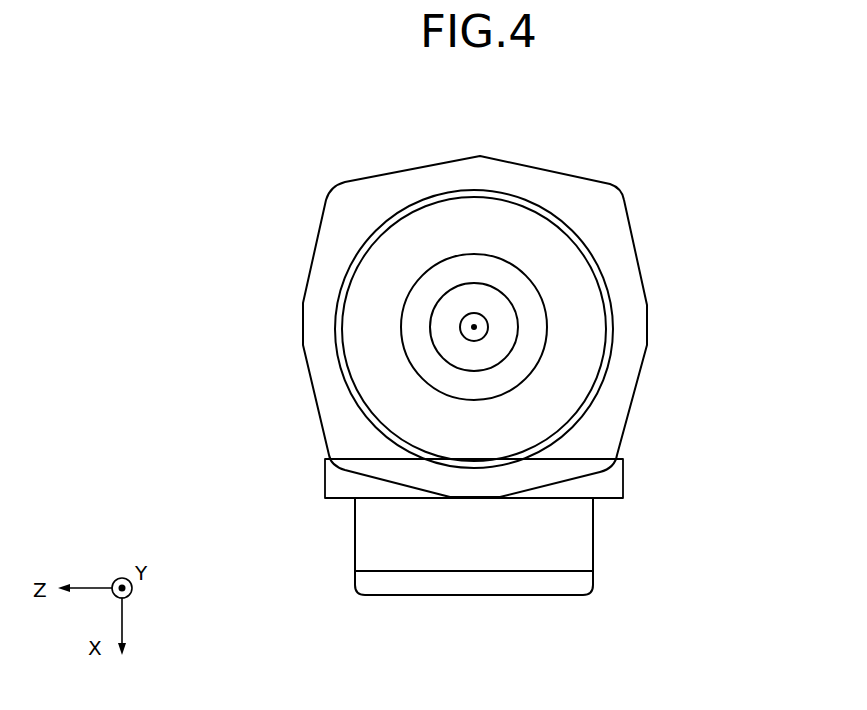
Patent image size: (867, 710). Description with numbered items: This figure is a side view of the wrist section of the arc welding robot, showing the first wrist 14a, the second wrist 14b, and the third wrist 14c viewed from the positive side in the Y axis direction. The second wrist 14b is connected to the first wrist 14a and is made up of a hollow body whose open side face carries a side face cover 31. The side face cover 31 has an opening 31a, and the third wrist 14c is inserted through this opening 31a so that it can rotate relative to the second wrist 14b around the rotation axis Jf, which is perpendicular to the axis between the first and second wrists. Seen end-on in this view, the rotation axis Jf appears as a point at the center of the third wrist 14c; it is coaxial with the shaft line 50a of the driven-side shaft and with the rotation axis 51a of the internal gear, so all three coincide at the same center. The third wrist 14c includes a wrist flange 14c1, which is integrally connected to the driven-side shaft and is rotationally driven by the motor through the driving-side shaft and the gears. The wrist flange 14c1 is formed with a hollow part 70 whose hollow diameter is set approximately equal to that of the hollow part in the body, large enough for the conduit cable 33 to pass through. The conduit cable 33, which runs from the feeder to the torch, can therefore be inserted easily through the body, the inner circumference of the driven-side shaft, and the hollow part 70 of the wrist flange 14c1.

The first wrist 14a is at (522, 595).
The second wrist 14b is at (546, 164).
The third wrist 14c is at (596, 404).
The wrist flange 14c1 is at (522, 360).
The side face cover 31 is at (593, 193).
The opening 31a is at (427, 198).
The conduit cable 33 is at (490, 324).
The hollow part 70 is at (434, 335).
The rotation axis Jf is at (480, 323).
The shaft line 50a is at (679, 218).
The rotation axis 51a is at (679, 241).